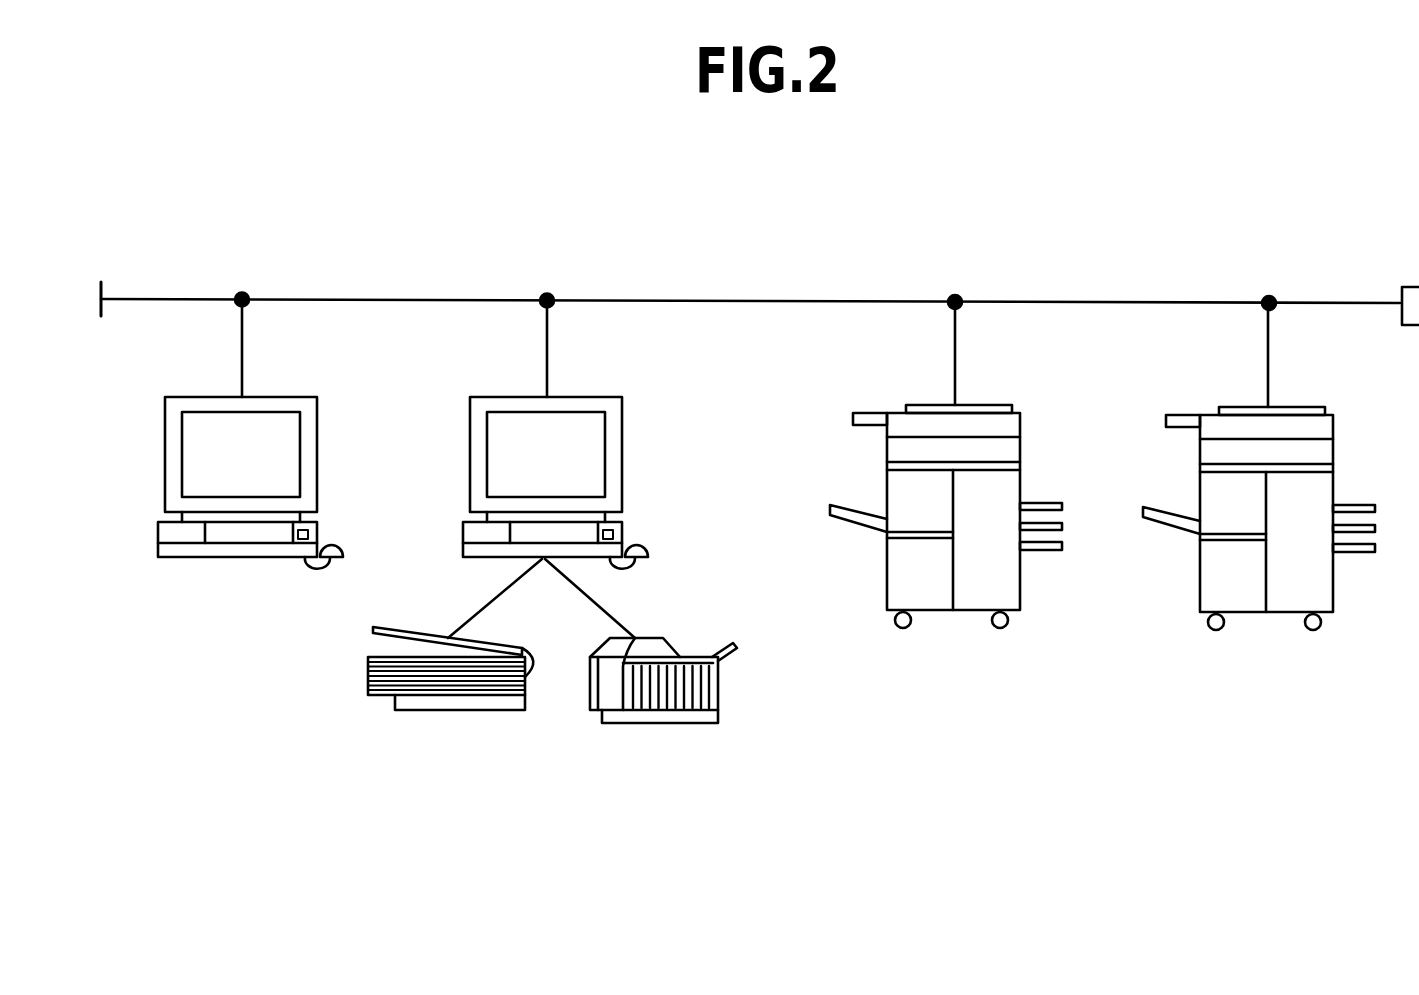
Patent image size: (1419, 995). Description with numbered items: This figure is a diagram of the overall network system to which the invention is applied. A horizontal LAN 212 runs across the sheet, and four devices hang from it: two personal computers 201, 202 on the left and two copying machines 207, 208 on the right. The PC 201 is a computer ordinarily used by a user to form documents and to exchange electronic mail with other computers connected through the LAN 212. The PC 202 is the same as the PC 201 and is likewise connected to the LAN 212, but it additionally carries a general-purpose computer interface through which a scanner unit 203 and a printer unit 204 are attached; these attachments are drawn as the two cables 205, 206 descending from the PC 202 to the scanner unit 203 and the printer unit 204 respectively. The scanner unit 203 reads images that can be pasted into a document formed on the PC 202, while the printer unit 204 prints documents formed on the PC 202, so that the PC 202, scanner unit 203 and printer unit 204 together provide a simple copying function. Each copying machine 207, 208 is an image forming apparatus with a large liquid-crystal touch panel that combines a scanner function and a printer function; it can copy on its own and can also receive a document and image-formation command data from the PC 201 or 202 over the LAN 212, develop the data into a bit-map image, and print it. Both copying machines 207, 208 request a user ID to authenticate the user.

The personal computer 201 is at (203, 559).
The personal computer 202 is at (625, 463).
The scanner unit 203 is at (457, 710).
The printer unit 204 is at (658, 724).
The cable connecting PC to scanner 205 is at (500, 593).
The cable connecting PC to printer 206 is at (600, 607).
The copying machine 207 is at (967, 611).
The copying machine 208 is at (1280, 613).
The LAN 212 is at (725, 298).